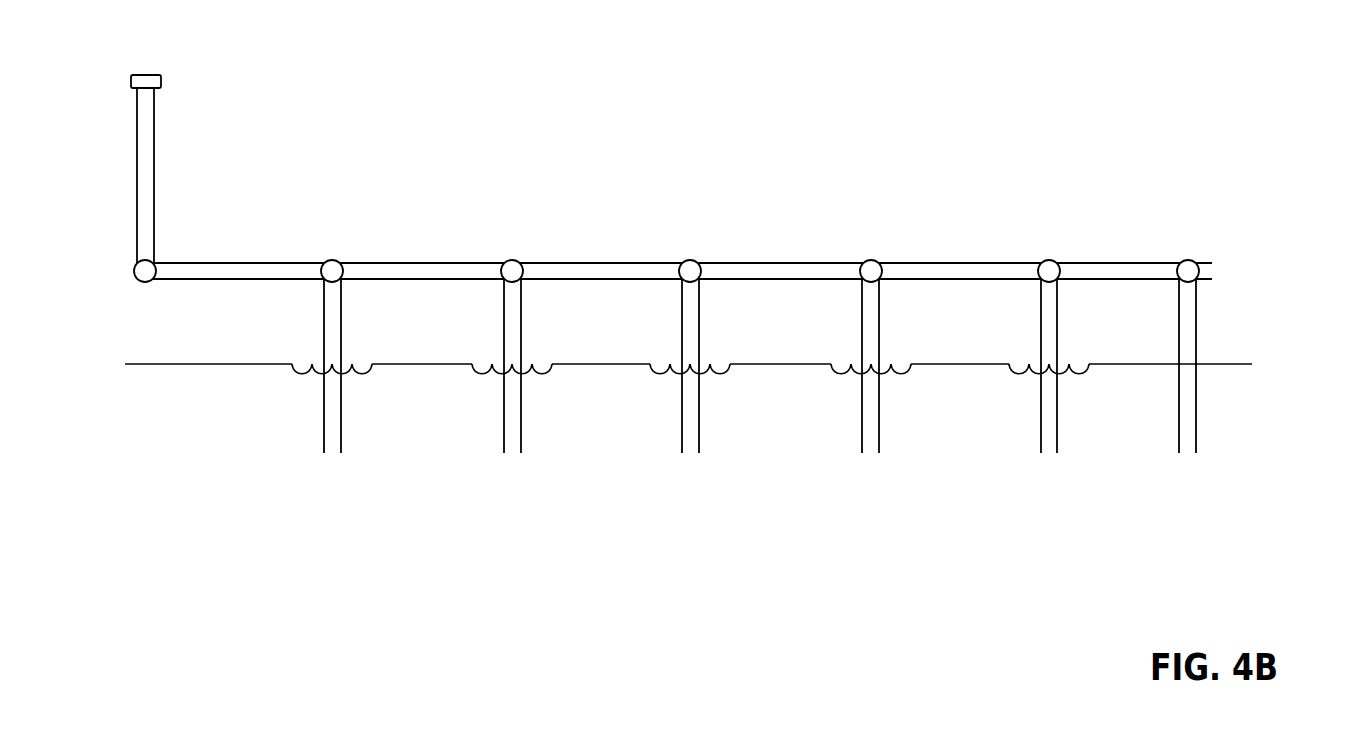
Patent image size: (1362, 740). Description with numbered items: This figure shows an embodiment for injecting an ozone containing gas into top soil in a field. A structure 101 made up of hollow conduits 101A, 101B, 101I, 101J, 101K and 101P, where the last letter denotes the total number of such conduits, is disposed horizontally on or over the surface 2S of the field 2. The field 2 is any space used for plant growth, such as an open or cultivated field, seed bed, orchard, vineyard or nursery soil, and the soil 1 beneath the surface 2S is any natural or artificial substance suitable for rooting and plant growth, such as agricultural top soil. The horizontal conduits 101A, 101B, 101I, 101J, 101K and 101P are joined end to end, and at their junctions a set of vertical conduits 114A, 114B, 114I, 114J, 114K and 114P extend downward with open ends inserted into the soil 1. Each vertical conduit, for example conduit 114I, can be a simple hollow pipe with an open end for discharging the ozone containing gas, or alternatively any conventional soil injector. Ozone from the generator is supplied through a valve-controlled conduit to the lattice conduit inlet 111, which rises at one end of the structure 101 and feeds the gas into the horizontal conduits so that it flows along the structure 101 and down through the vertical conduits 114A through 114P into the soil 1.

The soil 1 is at (871, 518).
The field 2 is at (1212, 333).
The surface of field 2S is at (1238, 362).
The structure 101 is at (237, 301).
The hollow conduit 101A is at (296, 262).
The hollow conduit 101B is at (478, 262).
The hollow conduit 101I is at (656, 262).
The hollow conduit 101J is at (823, 262).
The hollow conduit 101K is at (1010, 262).
The hollow conduit 101P is at (1148, 262).
The lattice conduit inlet 111 is at (130, 75).
The vertical conduit 114A is at (341, 350).
The vertical conduit 114B is at (521, 350).
The vertical conduit 114I is at (700, 350).
The vertical conduit 114J is at (879, 350).
The vertical conduit 114K is at (1058, 350).
The vertical conduit 114P is at (1197, 428).